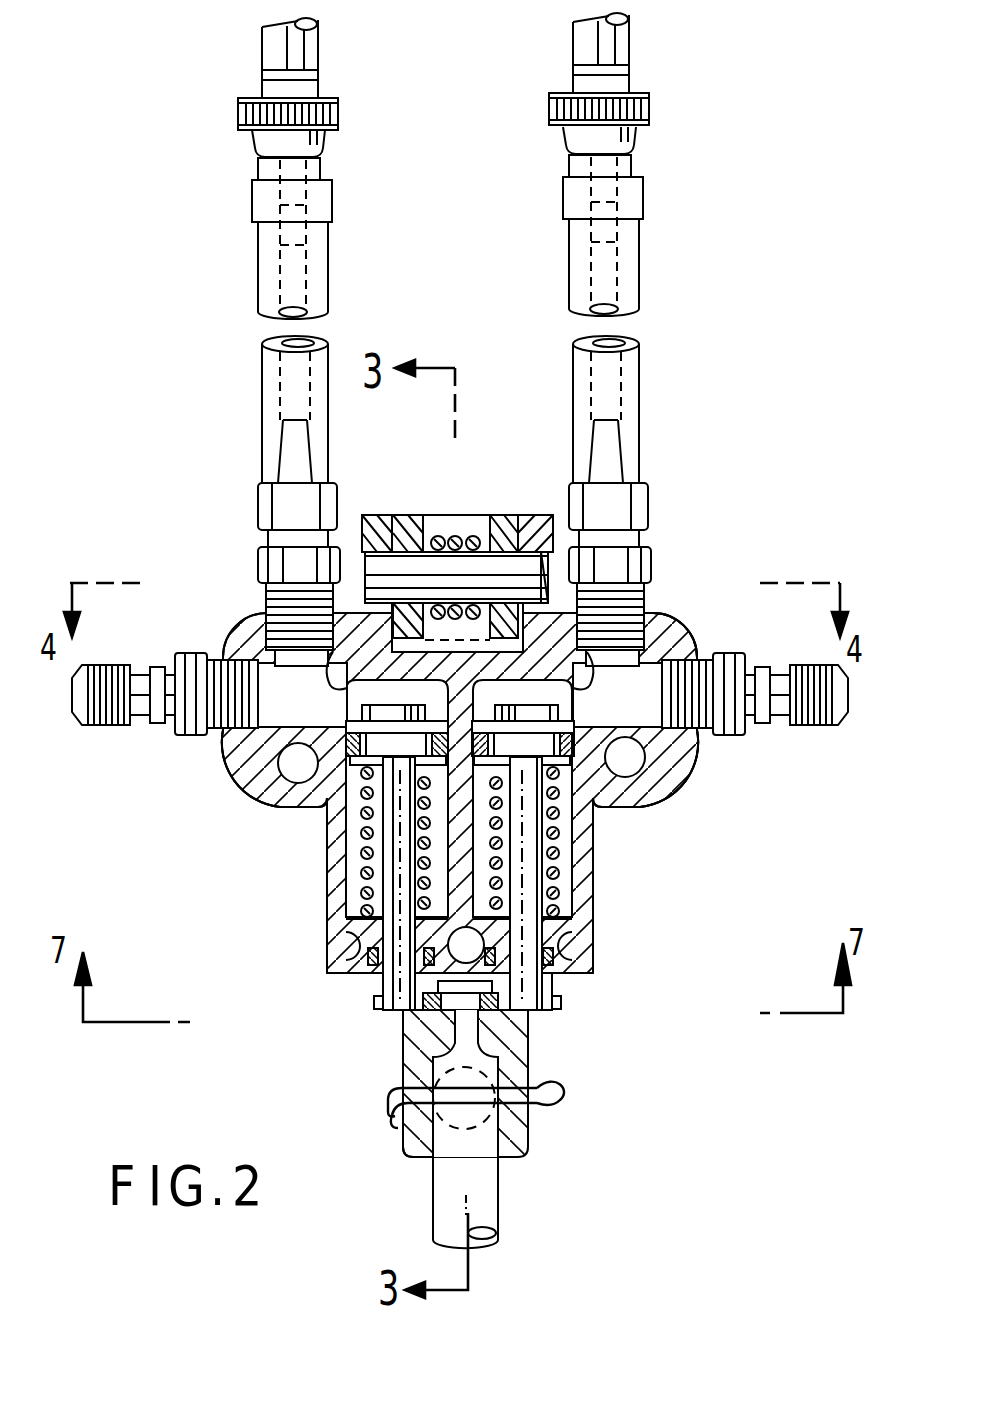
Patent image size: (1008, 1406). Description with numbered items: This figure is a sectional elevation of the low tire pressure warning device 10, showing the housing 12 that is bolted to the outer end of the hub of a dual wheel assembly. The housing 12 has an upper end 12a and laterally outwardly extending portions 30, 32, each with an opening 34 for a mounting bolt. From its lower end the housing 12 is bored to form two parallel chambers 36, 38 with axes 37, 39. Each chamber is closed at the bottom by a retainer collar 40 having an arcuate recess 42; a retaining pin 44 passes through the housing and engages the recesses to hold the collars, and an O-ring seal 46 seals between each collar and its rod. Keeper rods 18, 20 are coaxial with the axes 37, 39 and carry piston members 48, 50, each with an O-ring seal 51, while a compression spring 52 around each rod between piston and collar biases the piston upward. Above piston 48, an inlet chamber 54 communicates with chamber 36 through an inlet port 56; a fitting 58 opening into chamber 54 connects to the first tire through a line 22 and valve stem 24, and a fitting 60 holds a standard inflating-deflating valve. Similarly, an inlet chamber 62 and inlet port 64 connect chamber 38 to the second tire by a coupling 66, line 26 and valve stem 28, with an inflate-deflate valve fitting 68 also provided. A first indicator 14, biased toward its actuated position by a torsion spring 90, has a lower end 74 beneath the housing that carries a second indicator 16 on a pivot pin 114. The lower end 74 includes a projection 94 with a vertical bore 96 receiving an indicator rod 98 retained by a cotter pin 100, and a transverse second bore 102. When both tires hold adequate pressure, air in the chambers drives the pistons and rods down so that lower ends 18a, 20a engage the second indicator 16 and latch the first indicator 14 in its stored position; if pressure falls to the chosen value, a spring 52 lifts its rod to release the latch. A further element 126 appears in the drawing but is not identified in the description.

The low tire pressure warning device 10 is at (742, 555).
The housing 12 is at (702, 623).
The upper end 12a is at (411, 507).
The first indicator 14 is at (396, 1049).
The second indicator 16 is at (372, 1011).
The keeper rod 18 is at (578, 866).
The lower end 18a is at (548, 1008).
The keeper rod 20 is at (388, 818).
The lower end 20a is at (397, 1005).
The line 22 is at (640, 245).
The valve stem 24 is at (628, 55).
The line 26 is at (327, 253).
The valve stem 28 is at (320, 62).
The laterally outwardly extending portion 30 is at (680, 758).
The laterally outwardly extending portion 32 is at (235, 763).
The opening 34 is at (638, 760).
The chamber 36 is at (572, 887).
The axis 37 is at (574, 910).
The chamber 38 is at (395, 885).
The axis 39 is at (375, 910).
The retainer collar 40 is at (582, 930).
The arcuate recess 42 is at (578, 967).
The retaining pin 44 is at (517, 1013).
The O-ring seal 46 is at (562, 975).
The piston member 48 is at (512, 730).
The piston member 50 is at (374, 728).
The O-ring seal 51 is at (588, 742).
The compression spring 52 is at (556, 850).
The inlet chamber 54 is at (612, 672).
The inlet port 56 is at (586, 632).
The fitting 58 is at (635, 528).
The fitting 60 is at (736, 720).
The inlet chamber 62 is at (288, 668).
The inlet port 64 is at (336, 664).
The coupling 66 is at (290, 525).
The tire inflating-deflating valve fitting 68 is at (188, 660).
The lower end 74 is at (537, 1052).
The torsion spring 90 is at (452, 532).
The projection 94 is at (413, 1143).
The vertical bore 96 is at (437, 1145).
The indicator rod 98 is at (450, 1213).
The cotter pin 100 is at (556, 1105).
The second bore 102 is at (464, 1125).
The pivot pin 114 is at (440, 1016).
The seat wall 126 is at (282, 966).